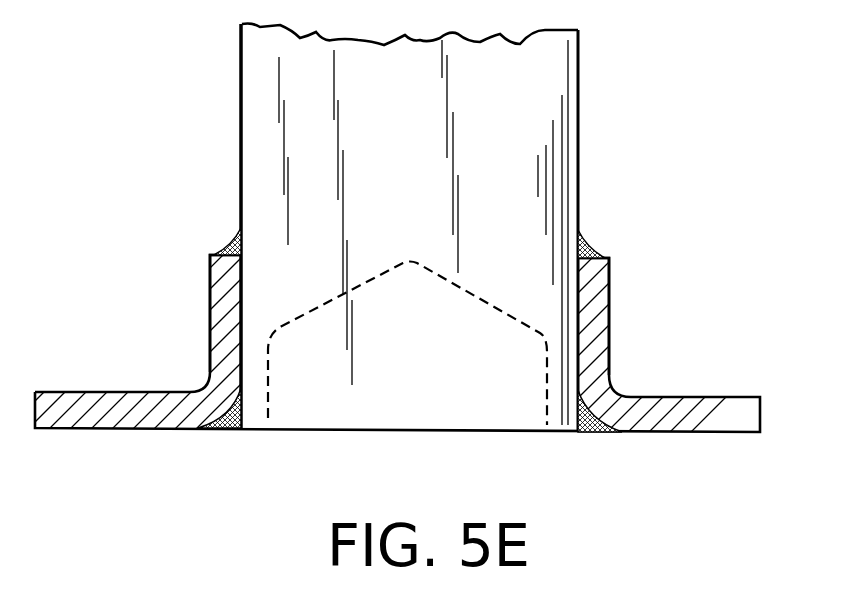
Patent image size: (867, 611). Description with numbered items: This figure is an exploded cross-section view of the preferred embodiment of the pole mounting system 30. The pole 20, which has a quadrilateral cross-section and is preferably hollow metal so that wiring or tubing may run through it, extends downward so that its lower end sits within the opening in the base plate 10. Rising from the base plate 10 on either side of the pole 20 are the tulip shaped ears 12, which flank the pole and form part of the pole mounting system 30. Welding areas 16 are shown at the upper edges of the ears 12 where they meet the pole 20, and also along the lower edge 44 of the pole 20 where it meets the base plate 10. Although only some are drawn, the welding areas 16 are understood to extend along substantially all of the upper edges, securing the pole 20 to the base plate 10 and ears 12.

The base plate 10 is at (684, 397).
The tulip shaped ears 12 is at (208, 296).
The welding areas 16 is at (584, 243).
The pole 20 is at (492, 128).
The pole mounting system 30 is at (242, 160).
The lower edge 44 is at (322, 430).